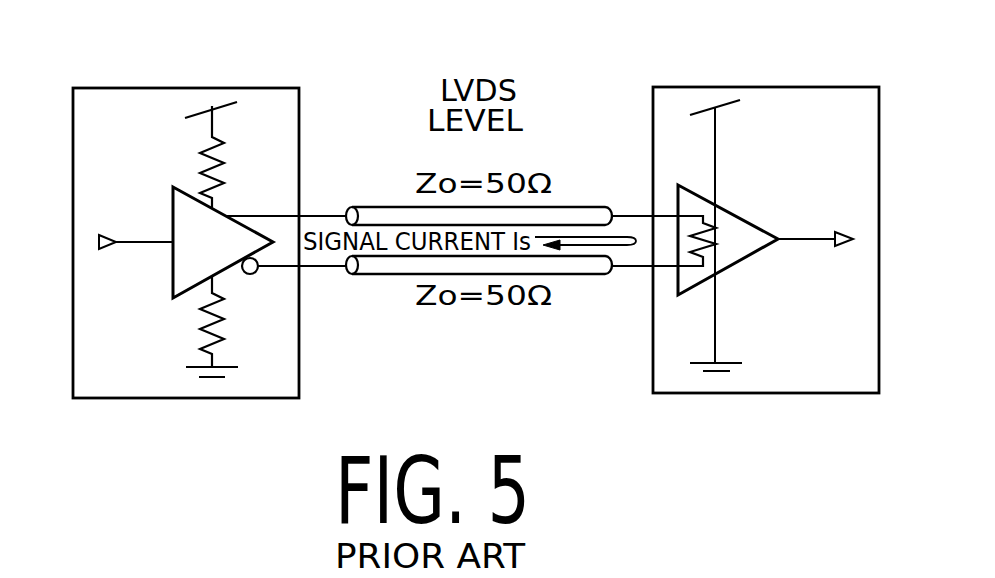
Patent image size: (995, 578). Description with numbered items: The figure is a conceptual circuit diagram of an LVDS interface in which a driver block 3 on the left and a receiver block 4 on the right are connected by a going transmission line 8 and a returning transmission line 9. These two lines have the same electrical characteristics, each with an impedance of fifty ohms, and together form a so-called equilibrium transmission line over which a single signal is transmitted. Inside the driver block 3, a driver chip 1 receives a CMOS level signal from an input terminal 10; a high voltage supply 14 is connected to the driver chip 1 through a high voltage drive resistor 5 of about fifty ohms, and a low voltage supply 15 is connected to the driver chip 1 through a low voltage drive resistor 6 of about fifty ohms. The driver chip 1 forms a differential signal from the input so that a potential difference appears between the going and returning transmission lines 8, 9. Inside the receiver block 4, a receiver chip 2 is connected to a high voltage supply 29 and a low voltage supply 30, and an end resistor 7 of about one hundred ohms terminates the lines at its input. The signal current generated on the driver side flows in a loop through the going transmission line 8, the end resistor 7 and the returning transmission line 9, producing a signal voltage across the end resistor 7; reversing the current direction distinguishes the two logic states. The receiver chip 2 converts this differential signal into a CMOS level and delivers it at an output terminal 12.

The driver chip 1 is at (223, 214).
The receiver chip 2 is at (690, 282).
The driver block 3 is at (113, 90).
The receiver block 4 is at (806, 88).
The high voltage drive resistor 5 is at (223, 147).
The low voltage drive resistor 6 is at (227, 313).
The end resistor 7 is at (718, 230).
The going transmission line 8 is at (583, 205).
The returning transmission line 9 is at (592, 275).
The input terminal 10 is at (105, 234).
The output terminal 12 is at (840, 231).
The high voltage supply 14 is at (210, 103).
The low voltage supply 15 is at (217, 380).
The high voltage supply 29 is at (710, 103).
The low voltage supply 30 is at (715, 378).